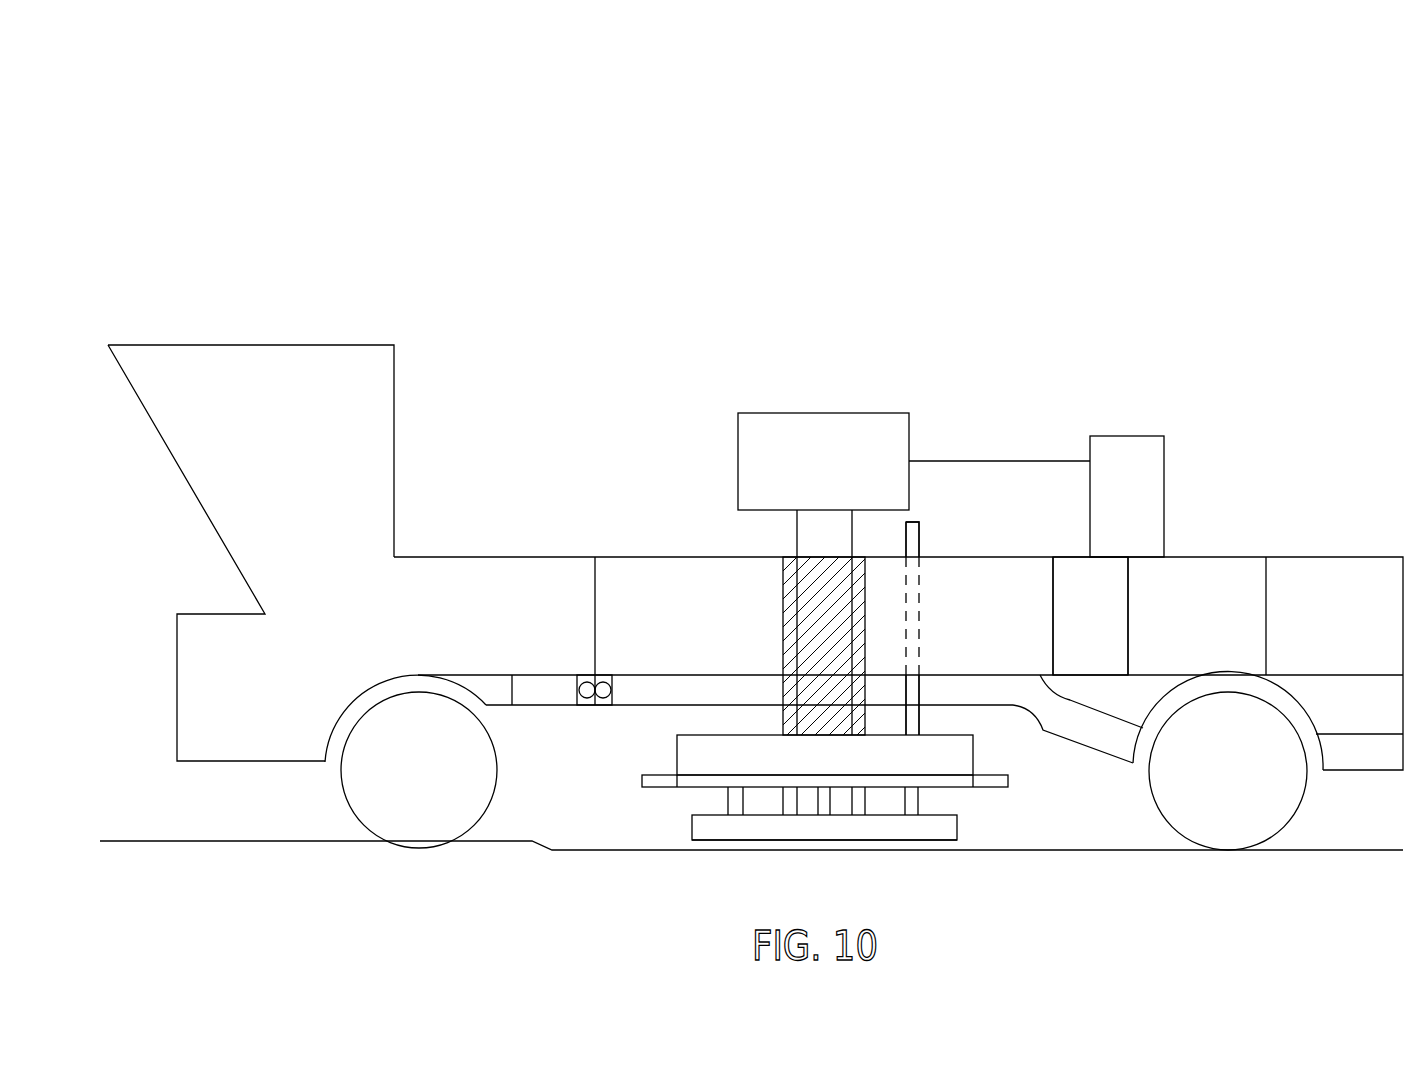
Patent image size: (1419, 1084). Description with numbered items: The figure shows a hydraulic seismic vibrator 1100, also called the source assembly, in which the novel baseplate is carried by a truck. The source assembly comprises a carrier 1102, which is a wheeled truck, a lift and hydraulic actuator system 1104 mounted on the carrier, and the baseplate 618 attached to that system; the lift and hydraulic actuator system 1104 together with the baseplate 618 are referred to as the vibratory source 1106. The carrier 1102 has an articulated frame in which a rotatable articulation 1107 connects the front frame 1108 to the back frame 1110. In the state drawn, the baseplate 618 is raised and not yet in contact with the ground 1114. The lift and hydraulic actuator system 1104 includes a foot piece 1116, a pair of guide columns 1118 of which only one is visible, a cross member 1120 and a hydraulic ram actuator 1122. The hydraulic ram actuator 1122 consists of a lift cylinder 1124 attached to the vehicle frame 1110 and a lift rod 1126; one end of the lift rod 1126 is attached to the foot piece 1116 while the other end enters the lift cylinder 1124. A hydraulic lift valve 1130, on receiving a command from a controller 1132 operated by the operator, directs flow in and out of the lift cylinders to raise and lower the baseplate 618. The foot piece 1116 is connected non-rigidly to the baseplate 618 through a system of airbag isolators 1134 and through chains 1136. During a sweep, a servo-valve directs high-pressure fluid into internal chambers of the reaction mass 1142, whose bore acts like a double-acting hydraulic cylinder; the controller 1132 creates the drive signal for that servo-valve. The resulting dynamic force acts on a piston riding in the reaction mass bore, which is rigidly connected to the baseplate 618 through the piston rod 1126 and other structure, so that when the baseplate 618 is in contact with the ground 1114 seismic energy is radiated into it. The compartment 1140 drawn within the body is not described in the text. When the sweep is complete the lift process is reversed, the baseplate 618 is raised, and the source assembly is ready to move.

The hydraulic seismic vibrator 1100 is at (1277, 76).
The carrier 1102 is at (250, 345).
The lift and hydraulic actuator system 1104 is at (1145, 318).
The vibratory source 1106 is at (230, 174).
The baseplate 618 is at (930, 840).
The rotatable articulation 1107 is at (603, 708).
The front frame 1108 is at (535, 708).
The back frame 1110 is at (1092, 752).
The ground 1114 is at (1342, 848).
The foot piece 1116 is at (990, 790).
The guide columns 1118 is at (783, 612).
The cross member 1120 is at (826, 413).
The hydraulic ram actuator 1122 is at (919, 617).
The lift cylinder 1124 is at (919, 535).
The lift rod 1126 is at (919, 713).
The hydraulic lift valve 1130 is at (1130, 436).
The controller 1132 is at (1228, 557).
The airbag isolators 1134 is at (823, 817).
The chains 1136 is at (728, 803).
The compartment 1140 is at (1119, 628).
The reaction mass 1142 is at (677, 757).